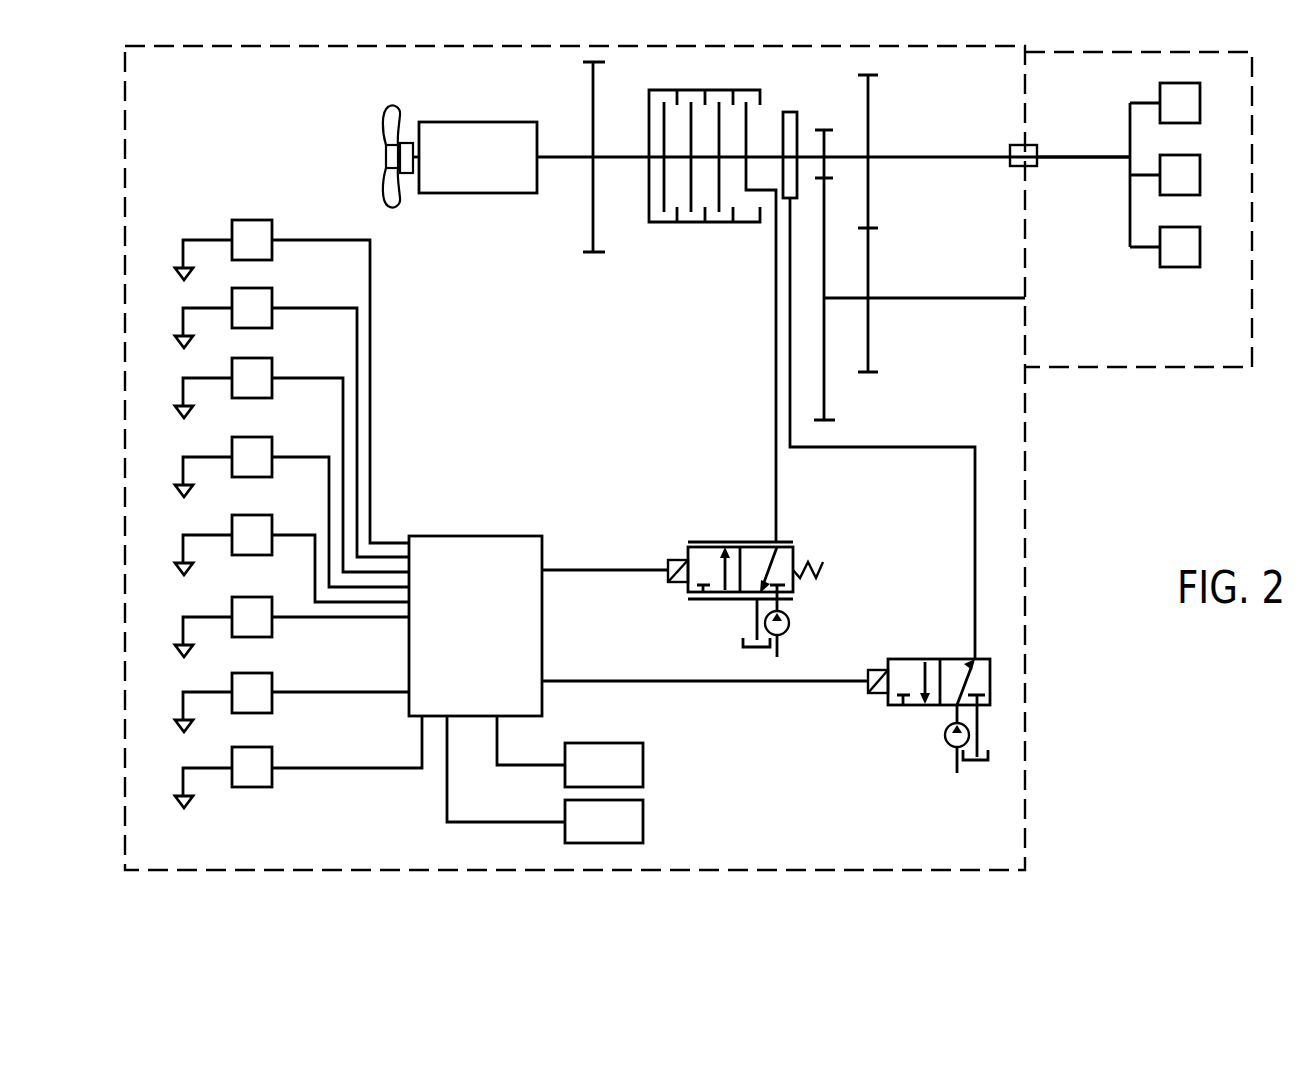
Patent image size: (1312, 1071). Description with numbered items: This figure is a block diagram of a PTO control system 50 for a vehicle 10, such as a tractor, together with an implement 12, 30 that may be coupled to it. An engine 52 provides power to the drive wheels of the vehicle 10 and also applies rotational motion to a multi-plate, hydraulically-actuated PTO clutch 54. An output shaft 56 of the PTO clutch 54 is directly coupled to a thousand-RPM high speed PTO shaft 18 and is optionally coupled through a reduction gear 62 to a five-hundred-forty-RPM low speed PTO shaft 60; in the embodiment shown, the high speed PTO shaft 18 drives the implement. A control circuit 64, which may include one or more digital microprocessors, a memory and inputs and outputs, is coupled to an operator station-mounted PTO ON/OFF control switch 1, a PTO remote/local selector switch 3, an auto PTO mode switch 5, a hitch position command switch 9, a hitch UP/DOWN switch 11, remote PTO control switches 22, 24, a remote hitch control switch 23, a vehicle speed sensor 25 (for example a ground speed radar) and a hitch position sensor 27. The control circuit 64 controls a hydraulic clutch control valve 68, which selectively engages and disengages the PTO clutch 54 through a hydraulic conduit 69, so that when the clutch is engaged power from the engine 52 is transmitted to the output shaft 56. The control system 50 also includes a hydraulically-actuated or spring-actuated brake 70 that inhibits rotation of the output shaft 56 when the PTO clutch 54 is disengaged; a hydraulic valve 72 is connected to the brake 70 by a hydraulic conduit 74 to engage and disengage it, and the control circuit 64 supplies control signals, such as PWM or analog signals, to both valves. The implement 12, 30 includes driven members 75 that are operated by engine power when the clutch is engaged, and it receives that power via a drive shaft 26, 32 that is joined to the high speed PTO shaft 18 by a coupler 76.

The PTO ON/OFF control switch 1 is at (258, 747).
The PTO remote/local selector switch 3 is at (258, 673).
The auto PTO mode switch 5 is at (258, 597).
The hitch position command switch 9 is at (258, 515).
The vehicle 10 is at (1028, 786).
The hitch UP/DOWN switch 11 is at (258, 437).
The implement 12 is at (1138, 236).
The high speed PTO shaft 18 is at (998, 153).
The remote PTO control switch 22 is at (258, 358).
The remote hitch control switch 23 is at (258, 288).
The remote PTO control switch 24 is at (256, 220).
The vehicle speed sensor 25 is at (643, 752).
The drive shaft 26 is at (1098, 175).
The hitch position sensor 27 is at (643, 808).
The implement 30 is at (1130, 368).
The drive shaft 32 is at (1091, 152).
The PTO control system 50 is at (638, 634).
The engine 52 is at (478, 122).
The PTO clutch 54 is at (727, 90).
The output shaft 56 is at (811, 155).
The low speed PTO shaft 60 is at (948, 298).
The reduction gear 62 is at (829, 221).
The control circuit 64 is at (478, 536).
The hydraulic clutch control valve 68 is at (712, 547).
The hydraulic conduit 69 is at (774, 342).
The brake 70 is at (786, 112).
The hydraulic valve 72 is at (913, 659).
The hydraulic conduit 74 is at (890, 447).
The driven members 75 is at (1181, 78).
The coupler 76 is at (1026, 167).